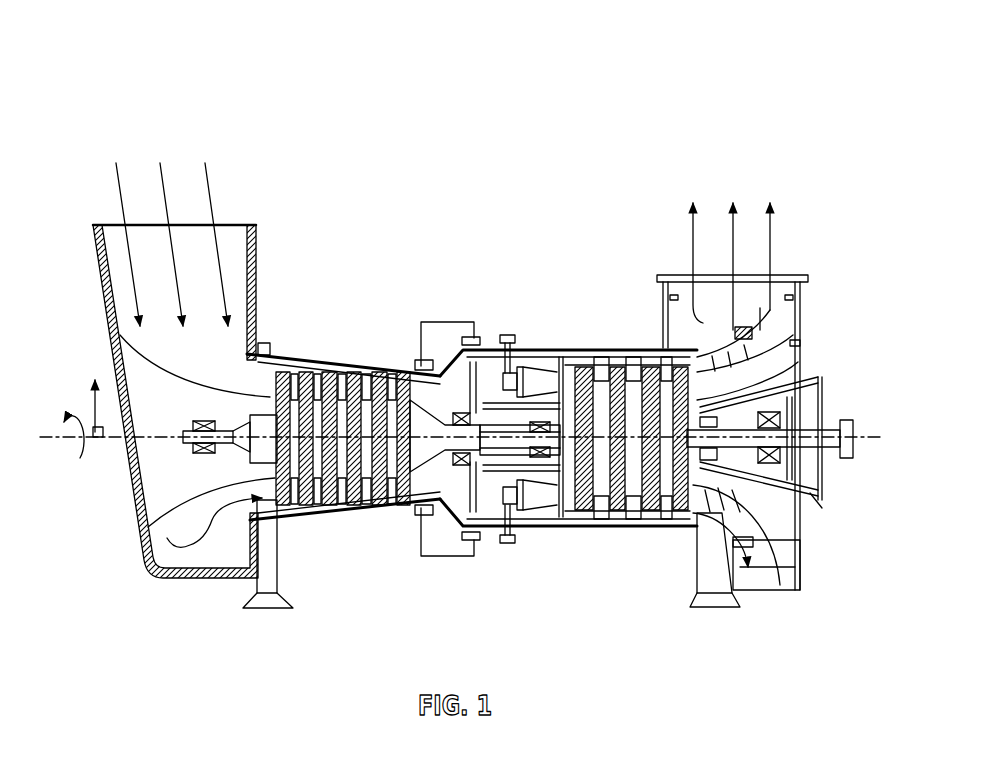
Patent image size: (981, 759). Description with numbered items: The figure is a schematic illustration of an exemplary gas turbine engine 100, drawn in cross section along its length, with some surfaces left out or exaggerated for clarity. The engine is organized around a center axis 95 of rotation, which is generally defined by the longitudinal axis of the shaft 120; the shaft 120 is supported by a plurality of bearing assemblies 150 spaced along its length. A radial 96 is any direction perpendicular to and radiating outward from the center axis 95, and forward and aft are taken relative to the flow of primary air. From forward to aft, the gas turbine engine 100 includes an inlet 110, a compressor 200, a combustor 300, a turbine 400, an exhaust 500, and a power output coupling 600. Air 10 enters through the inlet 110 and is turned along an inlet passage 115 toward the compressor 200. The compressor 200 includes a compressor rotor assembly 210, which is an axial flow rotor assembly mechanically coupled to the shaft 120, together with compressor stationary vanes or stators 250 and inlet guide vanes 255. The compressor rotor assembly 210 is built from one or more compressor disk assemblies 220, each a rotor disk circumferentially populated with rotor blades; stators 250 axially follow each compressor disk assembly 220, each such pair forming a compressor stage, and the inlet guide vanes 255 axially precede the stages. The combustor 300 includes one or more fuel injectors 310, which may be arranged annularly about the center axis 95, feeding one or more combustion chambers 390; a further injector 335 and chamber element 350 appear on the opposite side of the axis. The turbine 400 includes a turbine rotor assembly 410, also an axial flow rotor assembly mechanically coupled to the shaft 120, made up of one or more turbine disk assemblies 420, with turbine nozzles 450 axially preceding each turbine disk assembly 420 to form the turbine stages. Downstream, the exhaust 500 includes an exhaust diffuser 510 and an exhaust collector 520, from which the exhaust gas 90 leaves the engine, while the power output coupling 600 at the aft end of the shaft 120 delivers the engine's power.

The gas turbine engine 100 is at (124, 45).
The inlet air flow 10 is at (118, 195).
The inlet 110 is at (250, 138).
The inlet flow path 115 is at (240, 370).
The shaft 120 is at (195, 424).
The bearing assemblies 150 is at (212, 457).
The compressor 200 is at (450, 138).
The compressor rotor assembly 210 is at (337, 532).
The compressor disk assemblies 220 is at (320, 520).
The compressor stationary vanes (stators) 250 is at (343, 373).
The inlet guide vanes 255 is at (282, 350).
The combustor 300 is at (555, 138).
The fuel injectors 310 is at (503, 335).
The lower fuel injector 335 is at (510, 542).
The lower combustor liner 350 is at (530, 520).
The combustion chambers 390 is at (538, 367).
The turbine 400 is at (688, 138).
The turbine rotor assembly 410 is at (615, 537).
The turbine disk assemblies 420 is at (687, 500).
The turbine nozzles 450 is at (660, 360).
The exhaust 500 is at (830, 168).
The exhaust diffuser 510 is at (717, 347).
The exhaust collector 520 is at (787, 313).
The power output coupling 600 is at (840, 420).
The exhaust gas flow 90 is at (688, 235).
The center axis 95 is at (62, 455).
The radial 96 is at (92, 398).